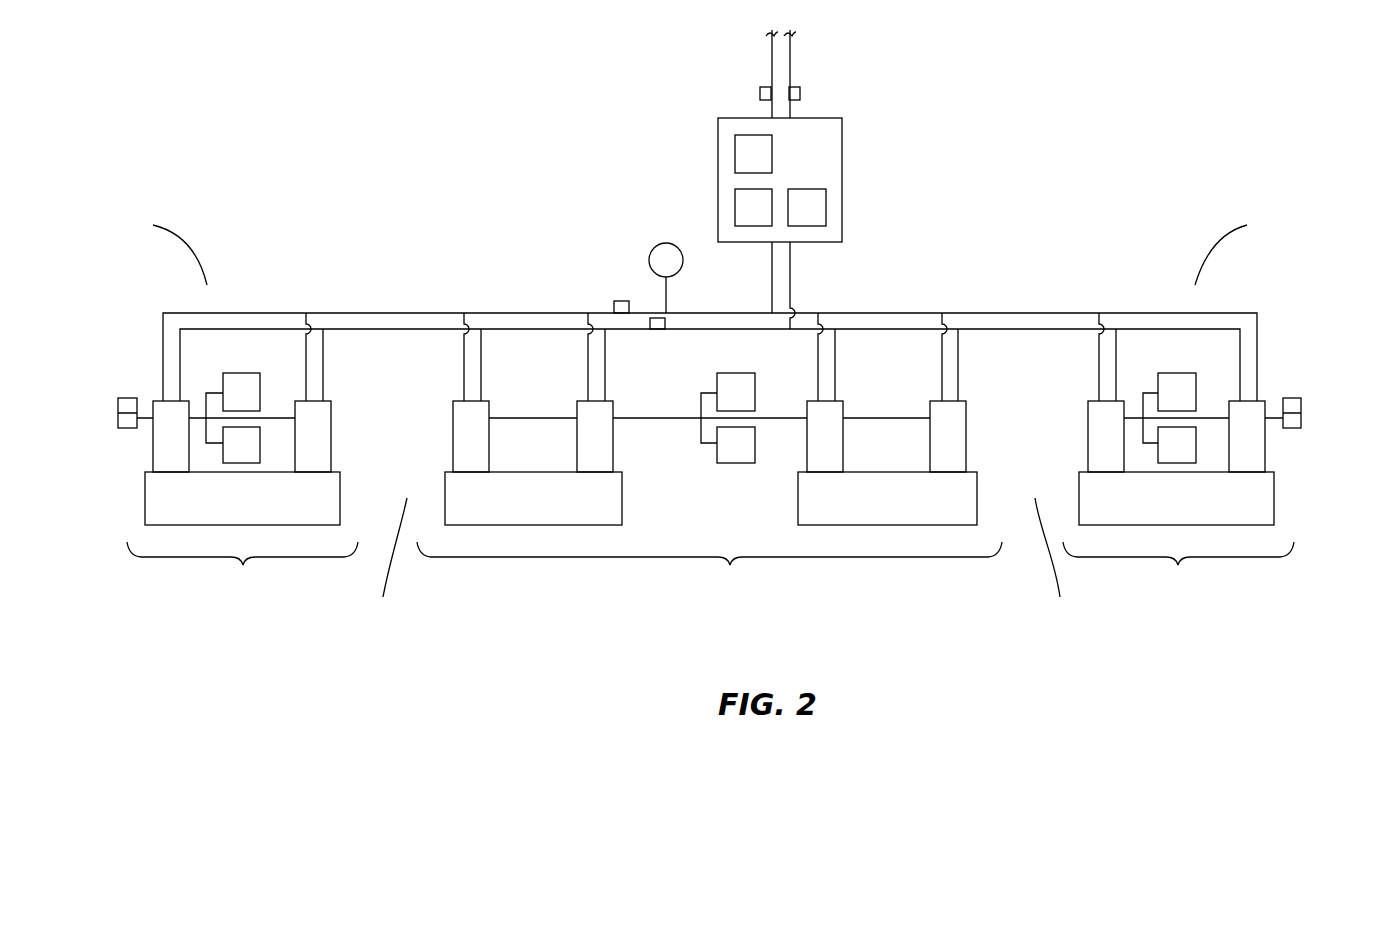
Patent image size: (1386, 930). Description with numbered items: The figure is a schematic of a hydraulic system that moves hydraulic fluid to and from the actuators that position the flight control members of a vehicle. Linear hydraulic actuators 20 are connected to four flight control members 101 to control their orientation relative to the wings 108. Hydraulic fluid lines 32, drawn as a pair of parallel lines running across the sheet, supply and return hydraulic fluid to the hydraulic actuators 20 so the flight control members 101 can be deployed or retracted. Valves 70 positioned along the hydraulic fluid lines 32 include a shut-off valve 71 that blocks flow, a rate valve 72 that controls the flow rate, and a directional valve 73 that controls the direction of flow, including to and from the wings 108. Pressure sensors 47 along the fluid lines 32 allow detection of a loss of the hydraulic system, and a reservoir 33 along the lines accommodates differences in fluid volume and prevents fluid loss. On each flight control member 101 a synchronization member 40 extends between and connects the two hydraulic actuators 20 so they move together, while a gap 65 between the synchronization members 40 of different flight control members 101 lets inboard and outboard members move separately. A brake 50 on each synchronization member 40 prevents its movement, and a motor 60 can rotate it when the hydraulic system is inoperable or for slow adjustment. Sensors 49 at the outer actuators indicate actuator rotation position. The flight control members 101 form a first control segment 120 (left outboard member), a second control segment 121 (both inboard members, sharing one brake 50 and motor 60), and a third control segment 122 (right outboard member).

The linear hydraulic actuator 20 is at (159, 442).
The hydraulic fluid line 32 is at (400, 330).
The reservoir 33 is at (654, 272).
The synchronization member 40 is at (278, 417).
The pressure sensor 47 is at (760, 93).
The sensor 49 is at (118, 421).
The brake 50 is at (229, 404).
The motor 60 is at (229, 457).
The gap 65 is at (715, 562).
The valve 70 is at (794, 164).
The shut-off valve 71 is at (766, 166).
The rate valve 72 is at (766, 219).
The directional valve 73 is at (820, 219).
The flight control member 101 is at (225, 509).
The wing 108 is at (702, 248).
The first control segment 120 is at (242, 569).
The second control segment 121 is at (709, 569).
The third control segment 122 is at (1178, 569).